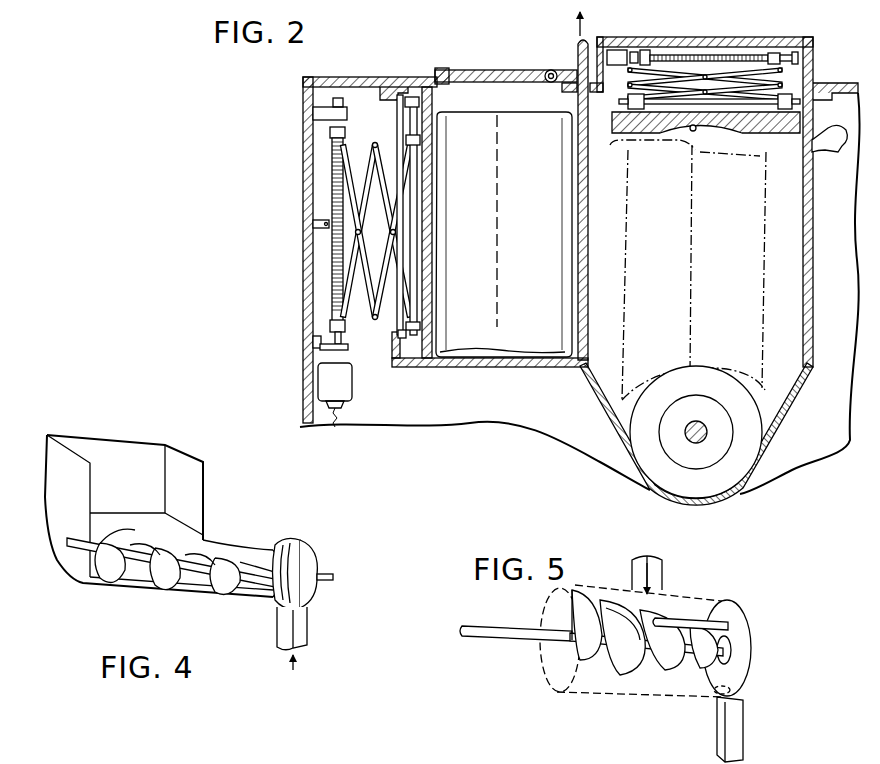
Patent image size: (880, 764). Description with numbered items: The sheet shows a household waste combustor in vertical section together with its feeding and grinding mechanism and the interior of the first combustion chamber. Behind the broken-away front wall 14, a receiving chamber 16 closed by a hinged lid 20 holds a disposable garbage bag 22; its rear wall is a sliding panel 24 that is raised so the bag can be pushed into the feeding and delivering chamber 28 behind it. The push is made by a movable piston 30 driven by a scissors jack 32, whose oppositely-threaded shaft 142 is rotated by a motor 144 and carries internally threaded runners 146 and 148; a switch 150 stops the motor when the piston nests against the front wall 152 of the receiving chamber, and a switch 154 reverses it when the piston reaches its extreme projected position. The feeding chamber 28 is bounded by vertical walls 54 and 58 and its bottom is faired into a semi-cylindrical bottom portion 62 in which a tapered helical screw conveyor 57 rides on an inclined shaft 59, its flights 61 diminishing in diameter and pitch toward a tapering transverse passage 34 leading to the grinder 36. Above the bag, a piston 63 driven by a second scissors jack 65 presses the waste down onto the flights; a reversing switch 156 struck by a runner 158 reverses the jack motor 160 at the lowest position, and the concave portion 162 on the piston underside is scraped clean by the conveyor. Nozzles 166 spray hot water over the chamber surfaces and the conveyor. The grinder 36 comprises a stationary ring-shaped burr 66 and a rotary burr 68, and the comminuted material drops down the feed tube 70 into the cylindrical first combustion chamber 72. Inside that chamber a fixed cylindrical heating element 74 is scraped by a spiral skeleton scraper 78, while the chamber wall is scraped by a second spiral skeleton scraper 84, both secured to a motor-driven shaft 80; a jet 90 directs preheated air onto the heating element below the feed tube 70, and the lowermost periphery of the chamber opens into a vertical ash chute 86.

In FIG. 2, the front wall 14 is at (302, 360).
In FIG. 2, the receiving chamber 16 is at (485, 370).
In FIG. 2, the hinged lid 20 is at (450, 70).
In FIG. 2, the garbage bag 22 is at (648, 190).
In FIG. 2, the sliding rear wall 24 is at (578, 62).
In FIG. 2, the feeding and delivering chamber 28 is at (722, 40).
In FIG. 2, the movable piston 30 is at (437, 162).
In FIG. 2, the scissors jack 32 is at (360, 186).
In FIG. 4, the transverse passage 34 is at (250, 555).
In FIG. 4, the grinder 36 is at (290, 540).
In FIG. 2, the vertical wall 54 is at (794, 302).
In FIG. 2, the helical screw conveyor 57 is at (765, 412).
In FIG. 4, the helical screw conveyor 57 is at (220, 548).
In FIG. 2, the vertical wall 58 is at (812, 262).
In FIG. 2, the inclined shaft 59 is at (690, 432).
In FIG. 4, the inclined shaft 59 is at (215, 588).
In FIG. 4, the flights 61 is at (140, 532).
In FIG. 2, the semi-cylindrical bottom portion 62 is at (725, 496).
In FIG. 4, the semi-cylindrical bottom portion 62 is at (120, 588).
In FIG. 2, the piston 63 is at (775, 134).
In FIG. 2, the scissors jack 65 is at (728, 72).
In FIG. 4, the stationary ring-shaped burr 66 is at (275, 612).
In FIG. 4, the rotary burr 68 is at (312, 550).
In FIG. 4, the feed tube 70 is at (308, 632).
In FIG. 5, the feed tube 70 is at (662, 572).
In FIG. 5, the first combustion chamber 72 is at (545, 686).
In FIG. 5, the cylindrical heating element 74 is at (570, 660).
In FIG. 5, the spiral skeleton scraper 78 is at (618, 676).
In FIG. 5, the shaft 80 is at (500, 633).
In FIG. 5, the spiral skeleton scraper 84 is at (652, 672).
In FIG. 5, the ash chute 86 is at (745, 738).
In FIG. 5, the jet 90 is at (668, 616).
In FIG. 2, the oppositely-threaded shaft 142 is at (332, 280).
In FIG. 2, the motor 144 is at (350, 387).
In FIG. 2, the internally threaded runner 146 is at (330, 132).
In FIG. 2, the internally threaded runner 148 is at (330, 325).
In FIG. 2, the switch 150 is at (318, 334).
In FIG. 2, the front wall 152 is at (400, 88).
In FIG. 2, the switch 154 is at (313, 224).
In FIG. 2, the reversing switch 156 is at (700, 54).
In FIG. 2, the runner 158 is at (644, 52).
In FIG. 2, the motor 160 is at (614, 52).
In FIG. 2, the concave portion 162 is at (644, 160).
In FIG. 2, the nozzles 166 is at (696, 130).